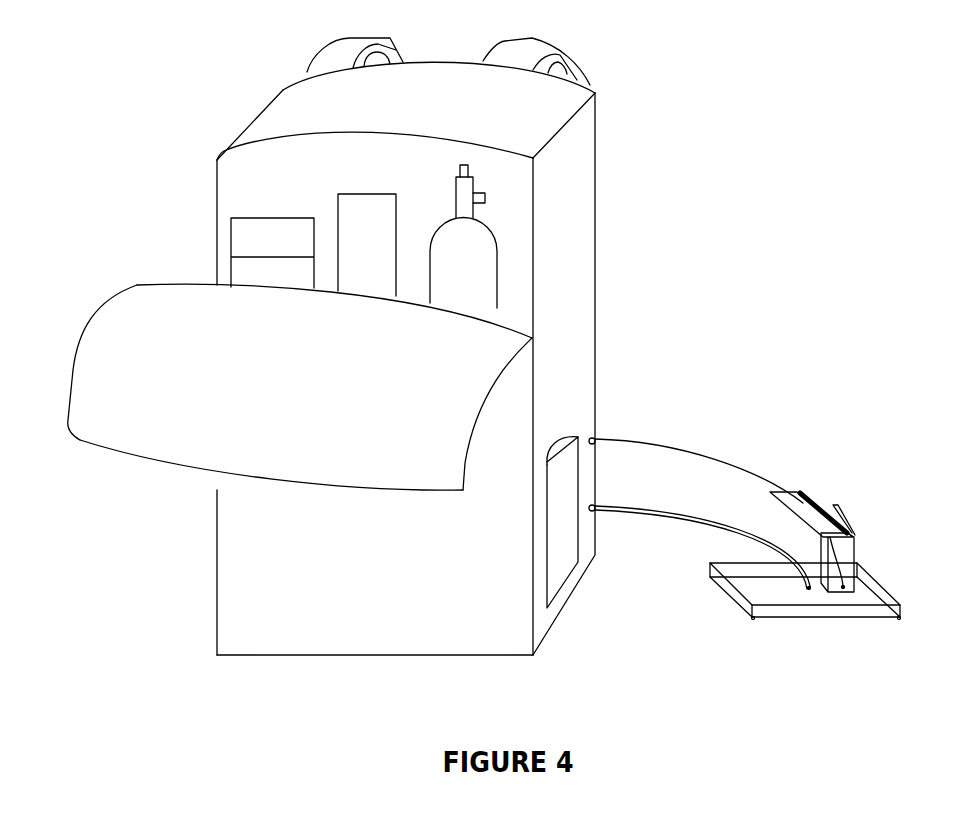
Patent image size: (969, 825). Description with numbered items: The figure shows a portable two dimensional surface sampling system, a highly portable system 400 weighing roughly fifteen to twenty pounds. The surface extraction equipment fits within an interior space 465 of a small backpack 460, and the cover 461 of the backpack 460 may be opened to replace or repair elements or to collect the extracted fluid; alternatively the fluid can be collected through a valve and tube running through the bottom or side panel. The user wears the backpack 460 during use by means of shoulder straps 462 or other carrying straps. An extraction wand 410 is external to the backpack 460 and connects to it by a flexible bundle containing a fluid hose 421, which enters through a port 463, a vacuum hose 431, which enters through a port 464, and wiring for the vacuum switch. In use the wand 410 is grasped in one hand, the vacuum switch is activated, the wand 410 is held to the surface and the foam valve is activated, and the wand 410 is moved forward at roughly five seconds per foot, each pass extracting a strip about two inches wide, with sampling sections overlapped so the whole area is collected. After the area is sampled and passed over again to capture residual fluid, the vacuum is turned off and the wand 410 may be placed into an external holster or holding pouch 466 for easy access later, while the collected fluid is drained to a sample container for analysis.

The portable system 400 is at (177, 213).
The extraction wand 410 is at (842, 618).
The fluid hose 421 is at (693, 449).
The vacuum hose 431 is at (698, 522).
The backpack 460 is at (597, 218).
The cover 461 is at (184, 473).
The shoulder straps 462 is at (497, 50).
The port 463 is at (596, 438).
The port 464 is at (596, 505).
The interior space 465 is at (317, 190).
The holding pouch 466 is at (547, 558).